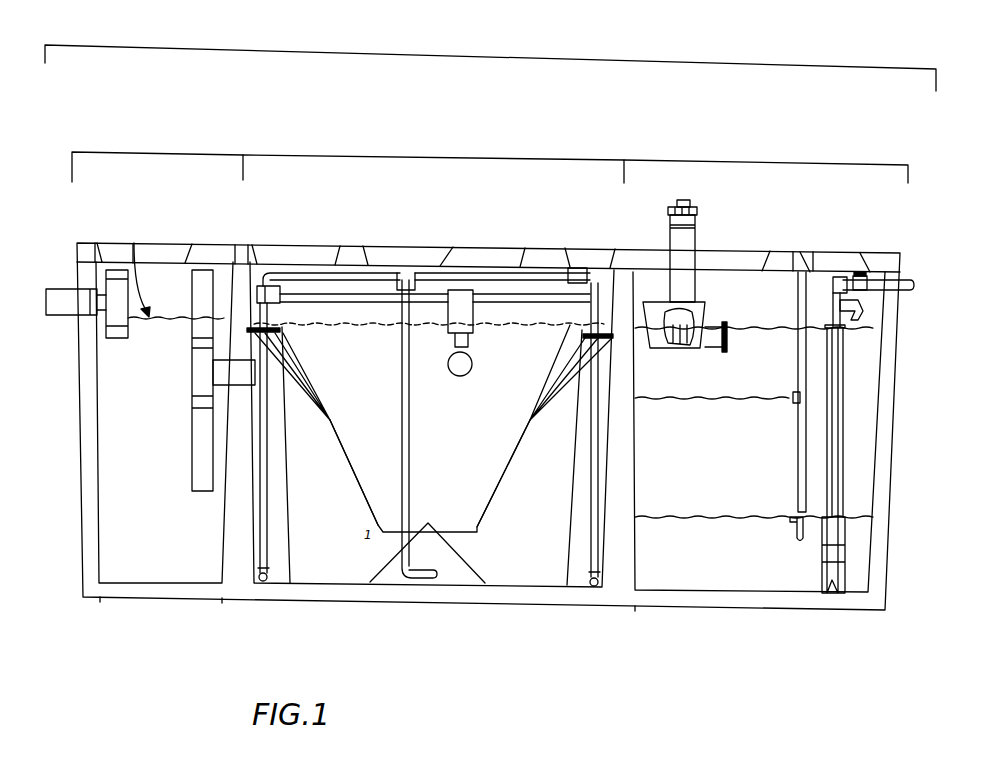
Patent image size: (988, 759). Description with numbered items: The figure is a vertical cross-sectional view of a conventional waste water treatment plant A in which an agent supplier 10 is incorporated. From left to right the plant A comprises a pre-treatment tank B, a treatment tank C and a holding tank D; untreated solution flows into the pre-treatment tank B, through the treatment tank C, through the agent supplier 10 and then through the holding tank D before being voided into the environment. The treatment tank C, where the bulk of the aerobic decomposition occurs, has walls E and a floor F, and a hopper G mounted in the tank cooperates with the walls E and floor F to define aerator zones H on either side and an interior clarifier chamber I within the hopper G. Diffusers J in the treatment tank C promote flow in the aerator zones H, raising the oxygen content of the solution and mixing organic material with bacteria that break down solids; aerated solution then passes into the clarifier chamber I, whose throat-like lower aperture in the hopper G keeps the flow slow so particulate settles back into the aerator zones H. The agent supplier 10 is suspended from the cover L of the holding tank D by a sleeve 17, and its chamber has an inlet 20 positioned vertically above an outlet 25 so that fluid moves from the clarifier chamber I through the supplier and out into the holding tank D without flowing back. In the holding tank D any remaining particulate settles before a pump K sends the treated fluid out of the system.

The waste water treatment plant A is at (515, 57).
The pre-treatment tank B is at (161, 153).
The treatment tank C is at (440, 157).
The holding tank D is at (773, 165).
The walls E is at (284, 449).
The floor F is at (298, 583).
The hopper G is at (490, 498).
The aerator zones H is at (330, 511).
The clarifier chamber I is at (456, 453).
The diffusers J is at (590, 578).
The pump K is at (822, 570).
The cover L is at (733, 251).
The agent supplier 10 is at (718, 213).
The sleeve 17 is at (700, 283).
The inlet 20 is at (669, 309).
The outlet 25 is at (727, 349).